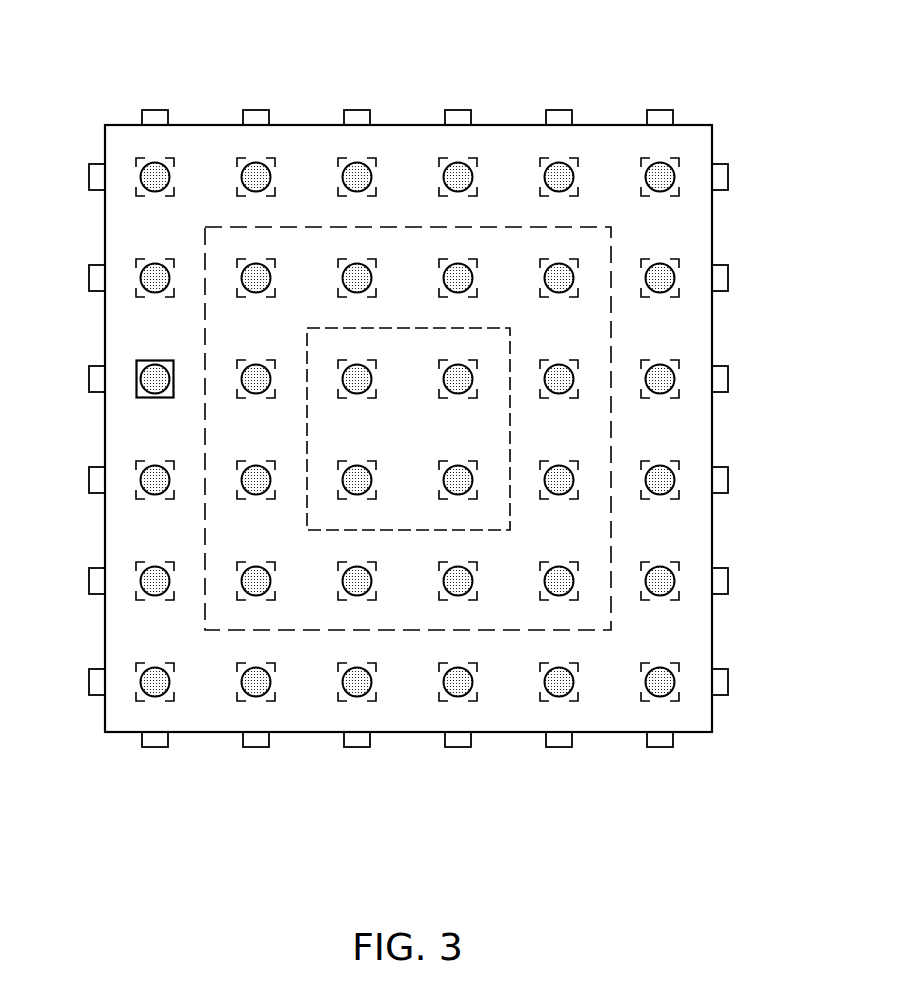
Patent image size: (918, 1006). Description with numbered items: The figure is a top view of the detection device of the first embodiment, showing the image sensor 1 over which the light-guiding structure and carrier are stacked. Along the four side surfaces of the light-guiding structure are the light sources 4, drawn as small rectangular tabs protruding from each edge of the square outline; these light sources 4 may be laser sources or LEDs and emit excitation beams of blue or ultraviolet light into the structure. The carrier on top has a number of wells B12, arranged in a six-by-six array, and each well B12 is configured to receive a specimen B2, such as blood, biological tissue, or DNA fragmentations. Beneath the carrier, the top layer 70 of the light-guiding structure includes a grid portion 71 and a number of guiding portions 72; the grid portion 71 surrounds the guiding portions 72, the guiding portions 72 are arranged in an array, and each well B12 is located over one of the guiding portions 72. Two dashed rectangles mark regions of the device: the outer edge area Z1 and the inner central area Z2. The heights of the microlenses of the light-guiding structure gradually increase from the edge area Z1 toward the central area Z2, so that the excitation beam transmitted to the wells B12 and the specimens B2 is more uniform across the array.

The image sensor 1 is at (731, 52).
The light sources 4 is at (357, 118).
The edge area Z1 is at (680, 443).
The central area Z2 is at (425, 443).
The wells B12 is at (240, 697).
The specimen B2 is at (260, 690).
The top layer 70 is at (333, 753).
The grid portion 71 is at (308, 680).
The guiding portions 72 is at (360, 697).